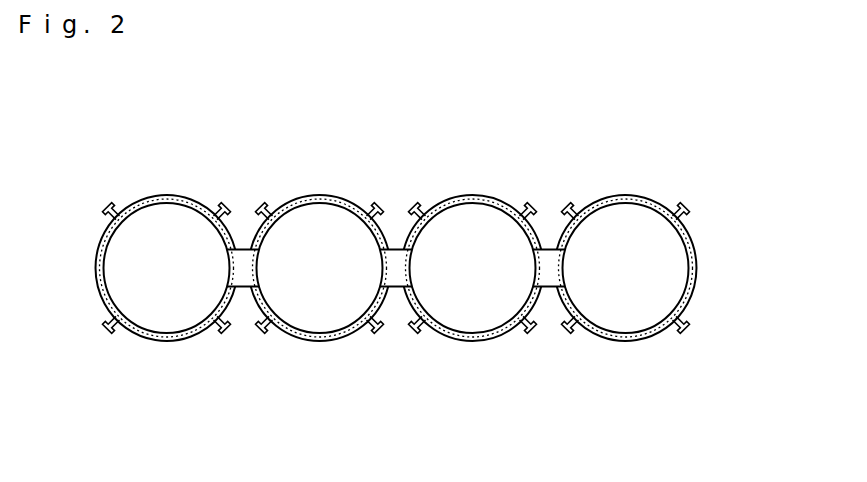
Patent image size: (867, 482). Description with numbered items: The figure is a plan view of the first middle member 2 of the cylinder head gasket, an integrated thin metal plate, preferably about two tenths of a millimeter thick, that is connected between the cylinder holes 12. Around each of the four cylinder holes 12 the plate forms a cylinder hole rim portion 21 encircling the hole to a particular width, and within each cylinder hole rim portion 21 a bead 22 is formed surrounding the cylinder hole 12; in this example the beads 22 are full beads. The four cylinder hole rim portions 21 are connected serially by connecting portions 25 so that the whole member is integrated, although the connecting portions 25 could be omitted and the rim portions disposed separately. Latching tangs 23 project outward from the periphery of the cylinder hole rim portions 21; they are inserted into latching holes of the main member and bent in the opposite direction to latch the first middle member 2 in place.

The first middle member 2 is at (730, 97).
The cylinder hole 12 is at (179, 218).
The cylinder hole rim portion 21 is at (694, 242).
The bead 22 is at (697, 285).
The latching tang 23 is at (113, 200).
The connecting portion 25 is at (241, 288).